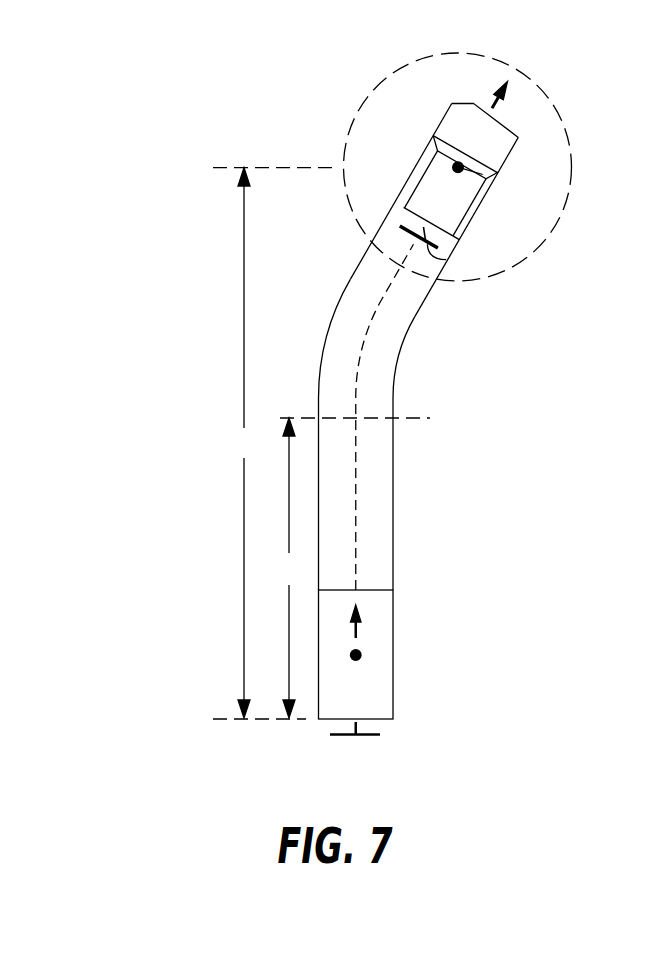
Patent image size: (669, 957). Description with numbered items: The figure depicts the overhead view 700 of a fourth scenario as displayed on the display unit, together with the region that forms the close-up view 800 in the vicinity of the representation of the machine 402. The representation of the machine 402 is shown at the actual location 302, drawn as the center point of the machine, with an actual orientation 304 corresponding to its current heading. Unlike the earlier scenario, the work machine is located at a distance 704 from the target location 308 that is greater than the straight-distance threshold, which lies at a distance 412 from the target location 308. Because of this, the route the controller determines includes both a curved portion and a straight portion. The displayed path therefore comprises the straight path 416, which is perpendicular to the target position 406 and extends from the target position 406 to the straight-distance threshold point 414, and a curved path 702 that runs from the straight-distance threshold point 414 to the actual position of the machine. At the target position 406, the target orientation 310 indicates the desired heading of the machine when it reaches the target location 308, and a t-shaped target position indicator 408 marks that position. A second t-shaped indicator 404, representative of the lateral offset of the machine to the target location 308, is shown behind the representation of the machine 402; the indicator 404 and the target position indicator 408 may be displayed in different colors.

The overhead view 700 is at (276, 118).
The close-up view 800 is at (568, 142).
The actual orientation 304 is at (495, 110).
The representation of the machine 402 is at (497, 140).
The actual location 302 is at (463, 170).
The indicator 404 is at (447, 260).
The curved path 702 is at (367, 341).
The straight-distance threshold point 414 is at (403, 415).
The straight path 416 is at (356, 484).
The distance 412 is at (289, 568).
The distance 704 is at (275, 443).
The target orientation 310 is at (357, 631).
The target location 308 is at (362, 655).
The target position 406 is at (394, 697).
The target position indicator 408 is at (372, 735).